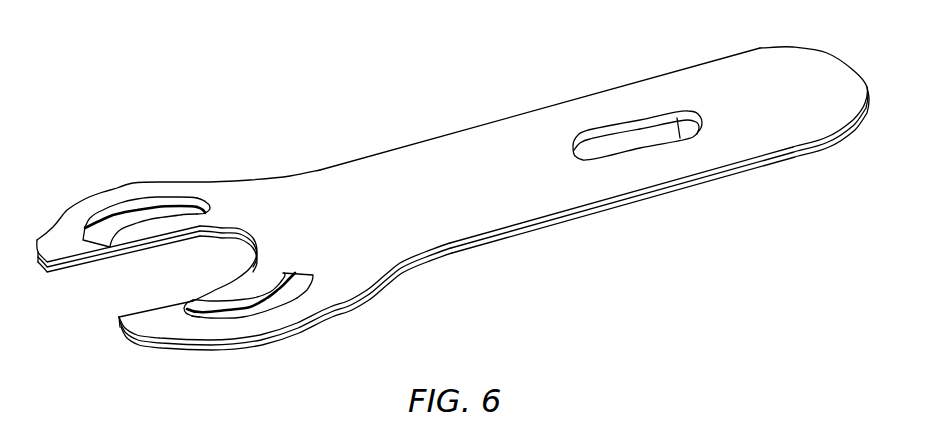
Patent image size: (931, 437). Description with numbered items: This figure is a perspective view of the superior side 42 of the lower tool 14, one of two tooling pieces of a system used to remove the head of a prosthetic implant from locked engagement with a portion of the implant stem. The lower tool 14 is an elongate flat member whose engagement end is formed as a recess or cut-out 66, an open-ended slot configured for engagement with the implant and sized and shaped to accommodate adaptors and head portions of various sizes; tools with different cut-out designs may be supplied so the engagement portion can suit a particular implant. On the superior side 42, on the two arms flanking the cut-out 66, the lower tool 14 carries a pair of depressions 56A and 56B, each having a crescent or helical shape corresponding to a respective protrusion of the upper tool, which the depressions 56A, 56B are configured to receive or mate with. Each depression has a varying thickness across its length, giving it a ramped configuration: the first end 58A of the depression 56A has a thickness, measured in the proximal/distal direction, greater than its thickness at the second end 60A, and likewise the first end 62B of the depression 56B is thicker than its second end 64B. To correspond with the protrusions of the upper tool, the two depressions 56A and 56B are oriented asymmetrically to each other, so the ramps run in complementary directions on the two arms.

The lower tool 14 is at (453, 195).
The superior side 42 is at (362, 175).
The recess or cut-out 66 is at (110, 293).
The depression 56B is at (148, 207).
The second end 64B is at (192, 208).
The first end 62B is at (97, 233).
The depression 56A is at (263, 308).
The first end 58A is at (300, 277).
The second end 60A is at (197, 315).